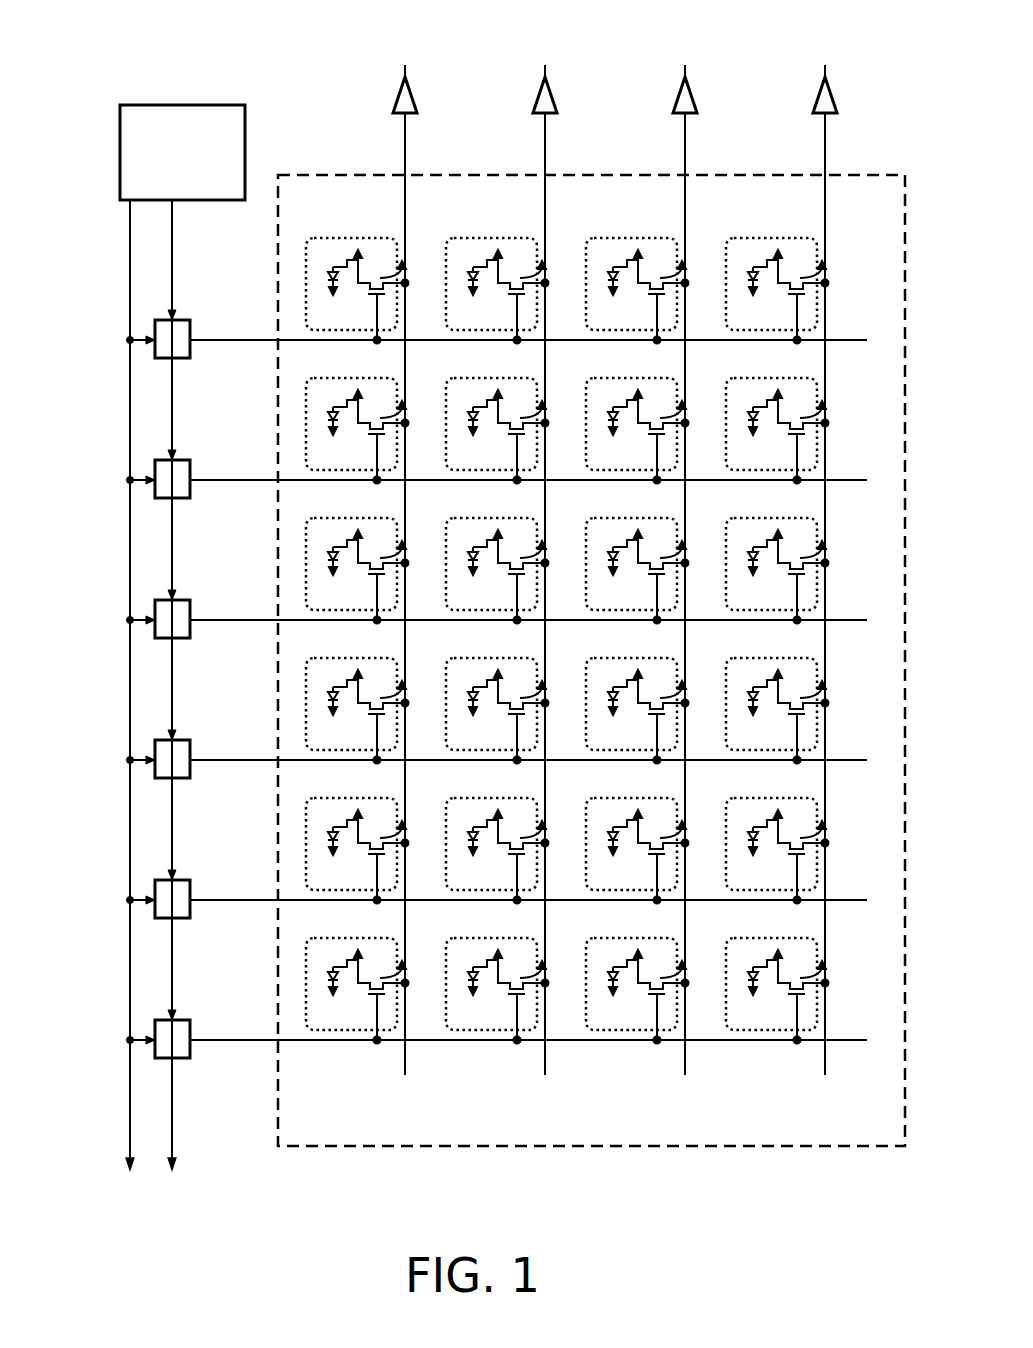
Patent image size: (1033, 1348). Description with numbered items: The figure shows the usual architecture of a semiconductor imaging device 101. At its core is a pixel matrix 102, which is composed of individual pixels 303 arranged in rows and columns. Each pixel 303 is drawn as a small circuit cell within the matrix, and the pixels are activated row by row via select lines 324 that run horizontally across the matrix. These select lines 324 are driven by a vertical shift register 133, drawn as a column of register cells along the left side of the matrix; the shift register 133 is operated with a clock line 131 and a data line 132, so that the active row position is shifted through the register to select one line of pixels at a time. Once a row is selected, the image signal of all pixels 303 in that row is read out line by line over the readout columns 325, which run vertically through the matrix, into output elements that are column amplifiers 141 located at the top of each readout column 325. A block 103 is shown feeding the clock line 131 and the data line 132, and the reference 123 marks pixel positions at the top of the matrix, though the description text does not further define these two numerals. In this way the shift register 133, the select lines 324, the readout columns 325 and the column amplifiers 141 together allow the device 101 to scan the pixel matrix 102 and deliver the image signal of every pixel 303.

The semiconductor imaging device 101 is at (254, 57).
The pixel matrix 102 is at (838, 1148).
The row driver / controller 103 is at (203, 168).
The pixel 123 is at (567, 262).
The clock line 131 is at (130, 385).
The data line 132 is at (174, 233).
The vertical shift register 133 is at (182, 320).
The column amplifiers 141 is at (415, 97).
The pixels 303 is at (330, 237).
The select lines 324 is at (255, 338).
The readout columns 325 is at (405, 148).